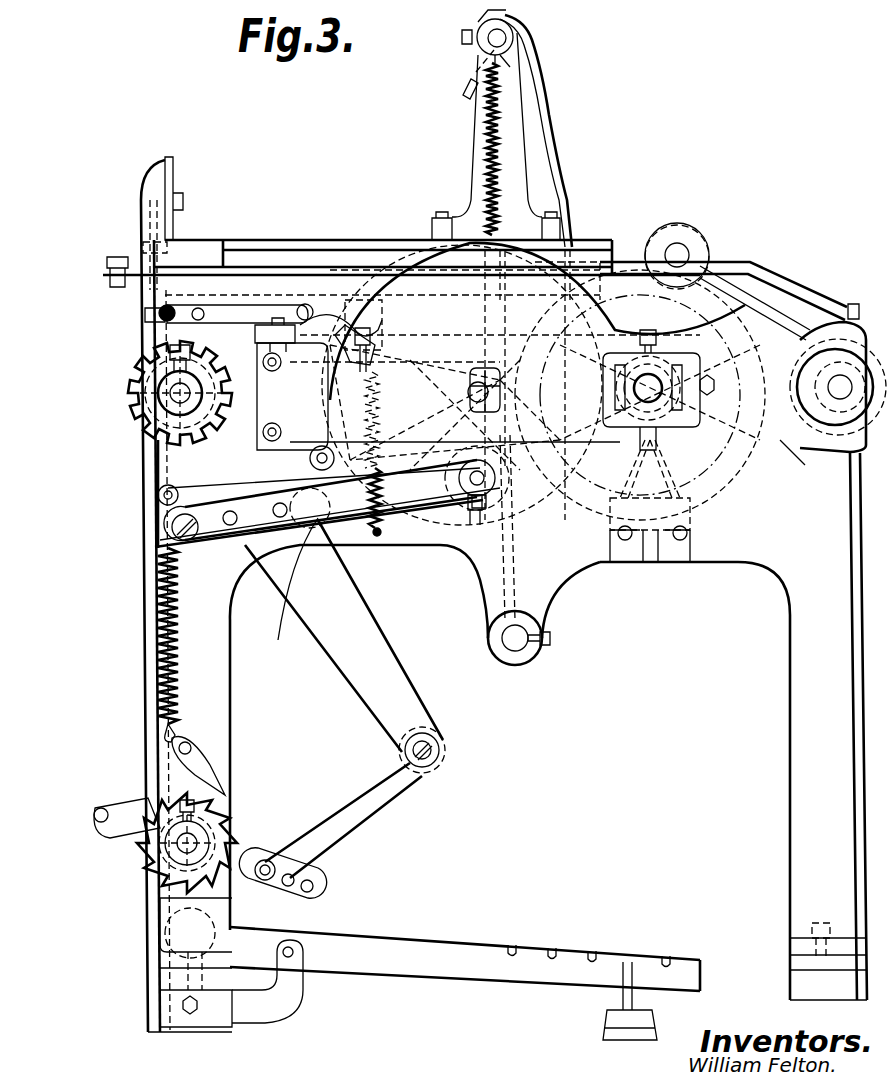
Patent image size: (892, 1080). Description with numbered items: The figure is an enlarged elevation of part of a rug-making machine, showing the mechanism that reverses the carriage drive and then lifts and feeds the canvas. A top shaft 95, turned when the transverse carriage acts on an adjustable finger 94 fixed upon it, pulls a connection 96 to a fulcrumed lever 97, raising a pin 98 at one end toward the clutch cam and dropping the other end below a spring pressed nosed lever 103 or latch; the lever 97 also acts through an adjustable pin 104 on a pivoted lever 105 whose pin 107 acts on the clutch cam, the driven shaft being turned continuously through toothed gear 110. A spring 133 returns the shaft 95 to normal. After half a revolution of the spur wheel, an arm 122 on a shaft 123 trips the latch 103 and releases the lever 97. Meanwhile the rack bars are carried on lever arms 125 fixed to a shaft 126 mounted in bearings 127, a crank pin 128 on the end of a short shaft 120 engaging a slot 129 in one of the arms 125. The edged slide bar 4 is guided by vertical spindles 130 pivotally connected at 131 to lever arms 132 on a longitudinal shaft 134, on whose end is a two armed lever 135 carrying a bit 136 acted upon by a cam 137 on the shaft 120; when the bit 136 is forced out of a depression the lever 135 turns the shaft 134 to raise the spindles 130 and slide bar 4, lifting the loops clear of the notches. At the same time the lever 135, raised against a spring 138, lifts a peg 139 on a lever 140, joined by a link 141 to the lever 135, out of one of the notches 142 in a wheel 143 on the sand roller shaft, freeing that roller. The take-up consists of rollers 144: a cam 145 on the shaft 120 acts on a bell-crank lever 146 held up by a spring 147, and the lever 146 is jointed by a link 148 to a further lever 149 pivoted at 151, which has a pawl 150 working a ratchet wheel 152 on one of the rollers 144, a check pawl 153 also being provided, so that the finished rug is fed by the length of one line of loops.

The edged slide bar 4 is at (150, 188).
The adjustable finger 94 is at (462, 88).
The top shaft 95 is at (492, 36).
The connection 96 is at (552, 133).
The fulcrumed lever 97 is at (440, 275).
The pin 98 is at (735, 562).
The spring pressed nosed lever 103 is at (316, 308).
The adjustable pin 104 is at (380, 380).
The pivoted lever 105 is at (645, 318).
The pin 107 is at (700, 318).
The toothed gear 110 is at (795, 443).
The short shaft 120 is at (465, 395).
The arm 122 is at (203, 438).
The shaft 123 is at (310, 460).
The lever arms 125 is at (520, 590).
The shaft 126 is at (510, 645).
The bearings 127 is at (538, 656).
The crank pin 128 is at (500, 378).
The slot 129 is at (498, 398).
The vertical spindles 130 is at (140, 282).
The pivotal connection 131 is at (165, 528).
The lever arms 132 is at (155, 578).
The spring 133 is at (485, 118).
The longitudinal shaft 134 is at (330, 530).
The two armed lever 135 is at (158, 488).
The bit 136 is at (488, 498).
The cam 137 is at (555, 294).
The spring 138 is at (150, 653).
The peg 139 is at (255, 334).
The lever 140 is at (245, 300).
The link 141 is at (155, 460).
The notches 142 is at (138, 356).
The wheel 143 is at (200, 383).
The take-up rollers 144 is at (160, 898).
The cam 145 is at (436, 234).
The bell-crank lever 146 is at (282, 638).
The spring 147 is at (380, 540).
The link 148 is at (355, 813).
The lever 149 is at (140, 848).
The pawl 150 is at (120, 798).
The pivot 151 is at (180, 850).
The ratchet wheel 152 is at (245, 835).
The check pawl 153 is at (205, 760).